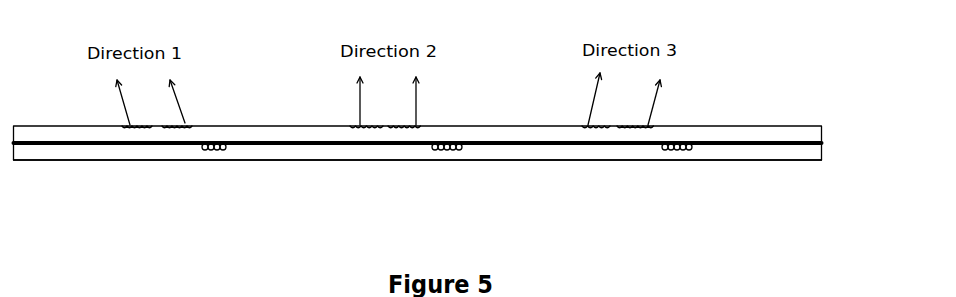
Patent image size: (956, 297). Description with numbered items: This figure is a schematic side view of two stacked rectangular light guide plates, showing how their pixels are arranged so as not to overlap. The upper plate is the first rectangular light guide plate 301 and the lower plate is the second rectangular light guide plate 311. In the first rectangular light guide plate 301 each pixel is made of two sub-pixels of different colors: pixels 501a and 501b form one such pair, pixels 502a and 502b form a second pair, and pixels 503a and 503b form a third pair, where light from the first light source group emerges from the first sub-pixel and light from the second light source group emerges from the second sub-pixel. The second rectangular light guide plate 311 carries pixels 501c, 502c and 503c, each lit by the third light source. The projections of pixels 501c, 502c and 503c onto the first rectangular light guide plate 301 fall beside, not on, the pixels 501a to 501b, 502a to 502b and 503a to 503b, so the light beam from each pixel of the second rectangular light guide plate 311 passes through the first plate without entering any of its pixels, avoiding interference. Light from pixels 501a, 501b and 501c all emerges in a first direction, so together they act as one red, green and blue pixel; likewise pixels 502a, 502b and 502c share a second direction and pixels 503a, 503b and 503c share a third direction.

The first rectangular light guide plate 301 is at (818, 127).
The second rectangular light guide plate 311 is at (810, 153).
The pixel 501a is at (125, 125).
The pixel 501b is at (175, 125).
The pixel 501c is at (204, 104).
The pixel 502a is at (355, 125).
The pixel 502b is at (412, 123).
The pixel 502c is at (443, 97).
The pixel 503a is at (587, 125).
The pixel 503b is at (645, 125).
The pixel 503c is at (688, 97).